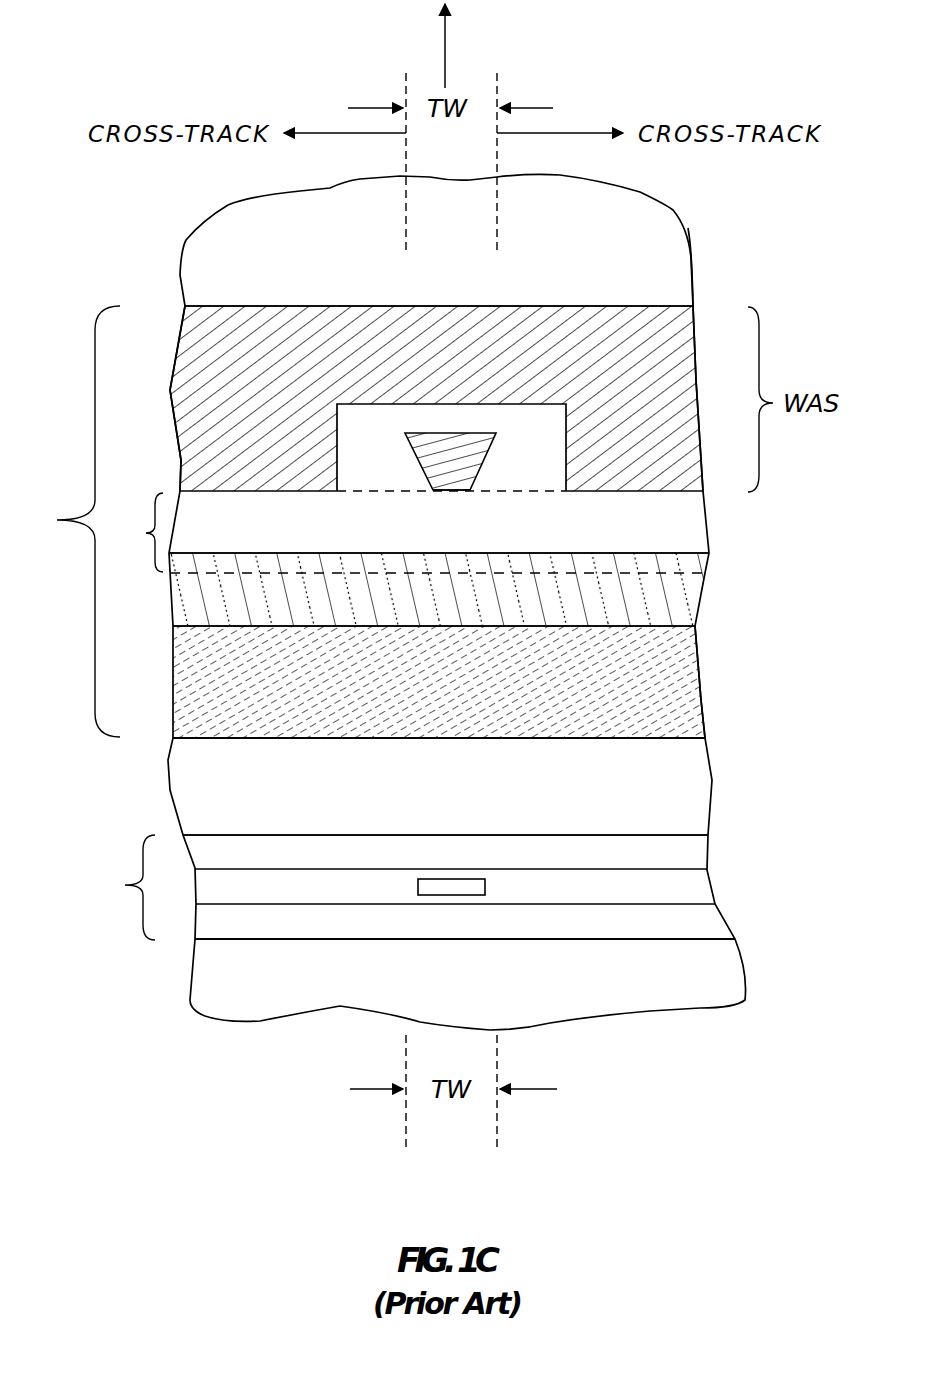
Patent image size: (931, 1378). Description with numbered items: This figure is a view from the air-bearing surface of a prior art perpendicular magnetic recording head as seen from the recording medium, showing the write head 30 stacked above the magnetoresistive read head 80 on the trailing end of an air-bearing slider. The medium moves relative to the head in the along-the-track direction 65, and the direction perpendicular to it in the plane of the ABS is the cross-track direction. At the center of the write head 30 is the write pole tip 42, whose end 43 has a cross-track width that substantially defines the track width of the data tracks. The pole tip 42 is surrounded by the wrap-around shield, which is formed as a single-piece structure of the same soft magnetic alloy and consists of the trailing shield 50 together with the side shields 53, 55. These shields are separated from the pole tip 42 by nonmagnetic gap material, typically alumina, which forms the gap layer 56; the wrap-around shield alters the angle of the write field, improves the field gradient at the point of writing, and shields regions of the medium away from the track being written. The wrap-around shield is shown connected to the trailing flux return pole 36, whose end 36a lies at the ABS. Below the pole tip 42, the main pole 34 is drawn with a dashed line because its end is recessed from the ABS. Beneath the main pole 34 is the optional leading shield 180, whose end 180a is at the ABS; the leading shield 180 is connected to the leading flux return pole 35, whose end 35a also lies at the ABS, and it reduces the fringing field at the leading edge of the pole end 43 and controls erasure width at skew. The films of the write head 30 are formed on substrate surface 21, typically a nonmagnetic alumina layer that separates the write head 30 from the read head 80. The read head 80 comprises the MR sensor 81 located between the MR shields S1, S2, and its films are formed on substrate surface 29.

The along-the-track direction 65 is at (445, 40).
The second or trailing flux return pole 36 is at (680, 216).
The end of trailing return pole 36a is at (676, 254).
The write head 30 is at (364, 522).
The trailing shield 50 is at (552, 318).
The side shield 55 is at (187, 396).
The side shield 53 is at (673, 385).
The nonmagnetic gap layer 56 is at (491, 419).
The pole tip 42 is at (487, 453).
The end of pole tip 43 is at (450, 482).
The main pole 34 is at (410, 532).
The leading shield 180 is at (703, 578).
The end of leading shield 180a is at (675, 610).
The first or leading flux return pole 35 is at (697, 677).
The end of leading return pole 35a is at (685, 710).
The substrate surface 21 is at (678, 740).
The magnetoresistive read head 80 is at (411, 887).
The MR shield S2 is at (697, 855).
The MR sensor 81 is at (485, 886).
The MR shield S1 is at (718, 927).
The substrate surface 29 is at (695, 942).